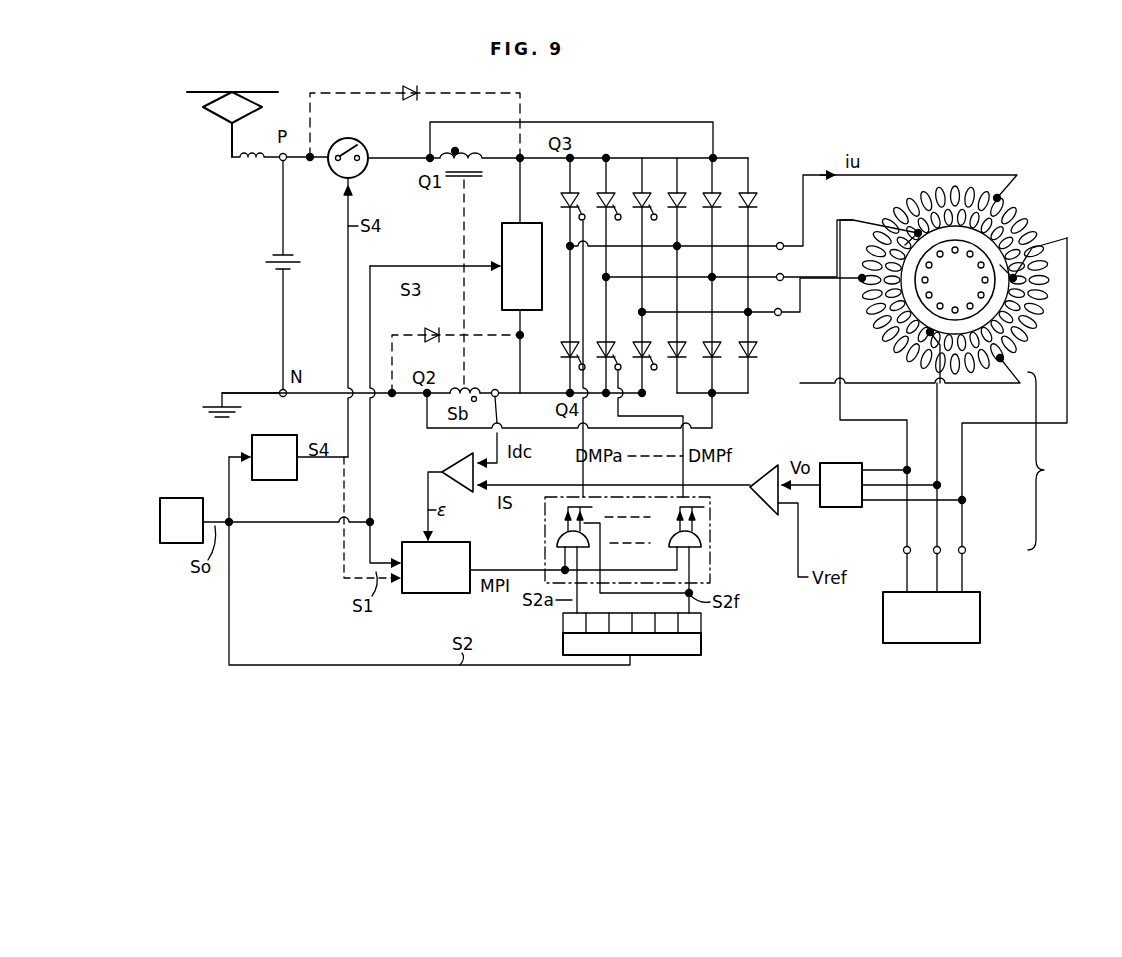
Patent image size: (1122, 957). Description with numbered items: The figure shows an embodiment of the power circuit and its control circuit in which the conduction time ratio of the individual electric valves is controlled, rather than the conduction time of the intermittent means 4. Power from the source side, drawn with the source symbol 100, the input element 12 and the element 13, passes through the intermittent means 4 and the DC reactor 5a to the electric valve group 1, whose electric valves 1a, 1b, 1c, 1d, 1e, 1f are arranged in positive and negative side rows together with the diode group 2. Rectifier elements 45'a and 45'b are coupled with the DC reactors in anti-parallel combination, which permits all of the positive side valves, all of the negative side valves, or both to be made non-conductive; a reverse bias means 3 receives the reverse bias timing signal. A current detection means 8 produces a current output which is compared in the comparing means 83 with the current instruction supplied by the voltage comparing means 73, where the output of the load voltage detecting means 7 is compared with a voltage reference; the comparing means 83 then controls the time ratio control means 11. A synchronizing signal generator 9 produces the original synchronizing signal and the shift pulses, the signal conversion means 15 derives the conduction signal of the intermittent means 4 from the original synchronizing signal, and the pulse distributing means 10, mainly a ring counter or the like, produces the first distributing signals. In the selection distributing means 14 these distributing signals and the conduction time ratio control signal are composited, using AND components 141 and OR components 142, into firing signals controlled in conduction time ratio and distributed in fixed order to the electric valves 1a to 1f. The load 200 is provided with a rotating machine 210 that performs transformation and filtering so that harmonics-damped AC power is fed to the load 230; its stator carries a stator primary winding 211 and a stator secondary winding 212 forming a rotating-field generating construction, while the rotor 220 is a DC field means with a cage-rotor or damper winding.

The AC power source 100 is at (203, 108).
The reactor coil 12 is at (245, 163).
The battery 13 is at (266, 268).
The intermittent means 4 is at (366, 148).
The DC reactor 5a is at (462, 160).
The rectifier element 45'a is at (415, 111).
The rectifier element 45'b is at (446, 350).
The reverse bias means 3 is at (524, 232).
The current detection means 8 is at (496, 389).
The electric valve group 1 is at (593, 153).
The electric valve 1a is at (578, 198).
The electric valve 1b is at (634, 340).
The electric valve 1c is at (614, 198).
The electric valve 1d is at (562, 350).
The electric valve 1e is at (650, 198).
The electric valve 1f is at (598, 340).
The diode bridge 2 is at (744, 149).
The signal conversion means 15 is at (275, 480).
The synchronizing signal generator 9 is at (185, 498).
The time ratio control means 11 is at (428, 593).
The comparing means 83 is at (466, 456).
The selection distributing means 14 is at (650, 555).
The AND component 141 is at (701, 545).
The OR component 142 is at (704, 508).
The pulse distributing means 10 is at (701, 645).
The voltage comparing means 73 is at (757, 468).
The load voltage detecting means 7 is at (845, 507).
The load 230 is at (998, 614).
The load 200 is at (1090, 484).
The rotating machine 210 is at (955, 227).
The stator primary winding 211 is at (955, 192).
The stator secondary winding 212 is at (990, 196).
The rotor 220 is at (975, 291).